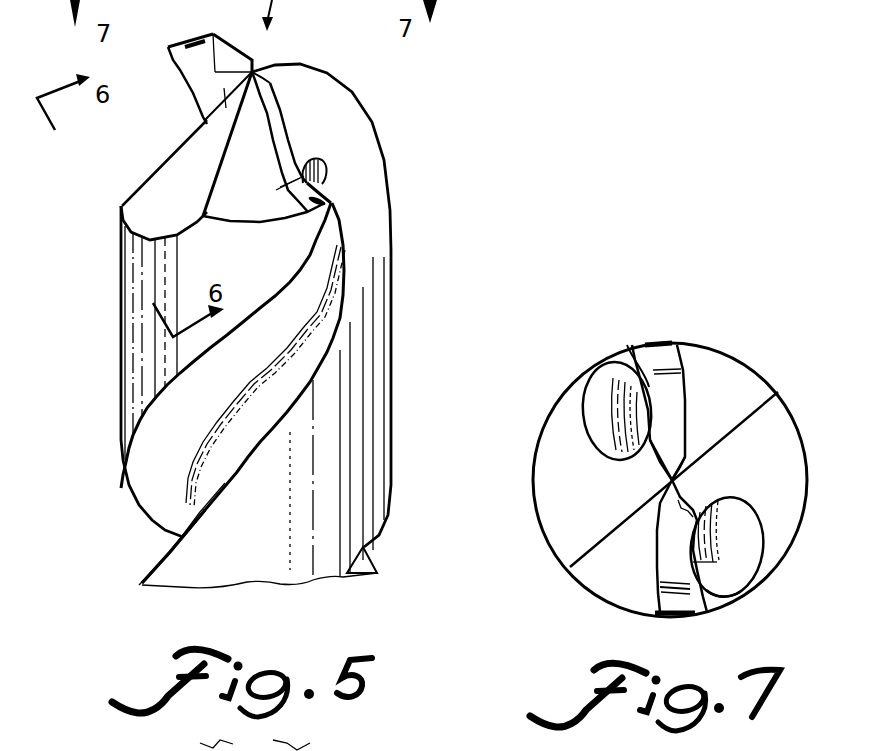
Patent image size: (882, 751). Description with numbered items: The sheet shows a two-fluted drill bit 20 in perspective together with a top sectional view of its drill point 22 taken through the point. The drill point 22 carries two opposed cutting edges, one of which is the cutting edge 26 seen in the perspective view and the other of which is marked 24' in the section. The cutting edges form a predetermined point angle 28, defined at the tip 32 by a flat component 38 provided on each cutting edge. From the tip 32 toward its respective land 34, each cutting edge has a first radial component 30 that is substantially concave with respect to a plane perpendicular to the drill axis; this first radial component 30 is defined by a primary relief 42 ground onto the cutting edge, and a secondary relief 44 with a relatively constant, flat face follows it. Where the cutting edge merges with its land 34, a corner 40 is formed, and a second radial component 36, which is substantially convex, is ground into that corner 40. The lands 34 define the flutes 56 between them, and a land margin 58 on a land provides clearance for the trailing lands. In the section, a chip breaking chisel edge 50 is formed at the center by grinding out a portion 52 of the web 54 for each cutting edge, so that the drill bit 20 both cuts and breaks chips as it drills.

In FIG. 5, the drill bit 20 is at (386, 305).
In FIG. 7, the drill point 22 is at (792, 366).
In FIG. 7, the land surface 24' is at (607, 355).
In FIG. 5, the cutting edge 26 is at (300, 142).
In FIG. 7, the cutting edge 26 is at (726, 546).
In FIG. 5, the point angle 28 is at (255, 739).
In FIG. 5, the first radial component 30 is at (330, 158).
In FIG. 5, the tip 32 is at (270, 47).
In FIG. 5, the land 34 is at (238, 263).
In FIG. 5, the second radial component 36 is at (267, 216).
In FIG. 5, the flat component 38 is at (294, 89).
In FIG. 7, the corner 40 is at (663, 308).
In FIG. 5, the primary relief 42 is at (224, 101).
In FIG. 7, the primary relief 42 is at (672, 478).
In FIG. 5, the secondary relief 44 is at (187, 144).
In FIG. 7, the secondary relief 44 is at (664, 473).
In FIG. 7, the chip breaking chisel edge 50 is at (676, 521).
In FIG. 5, the ground-out portion of web 52 is at (196, 90).
In FIG. 7, the ground-out portion of web 52 is at (664, 476).
In FIG. 7, the web 54 is at (608, 423).
In FIG. 5, the flute 56 is at (147, 546).
In FIG. 7, the flute 56 is at (742, 606).
In FIG. 5, the land margin 58 is at (196, 534).